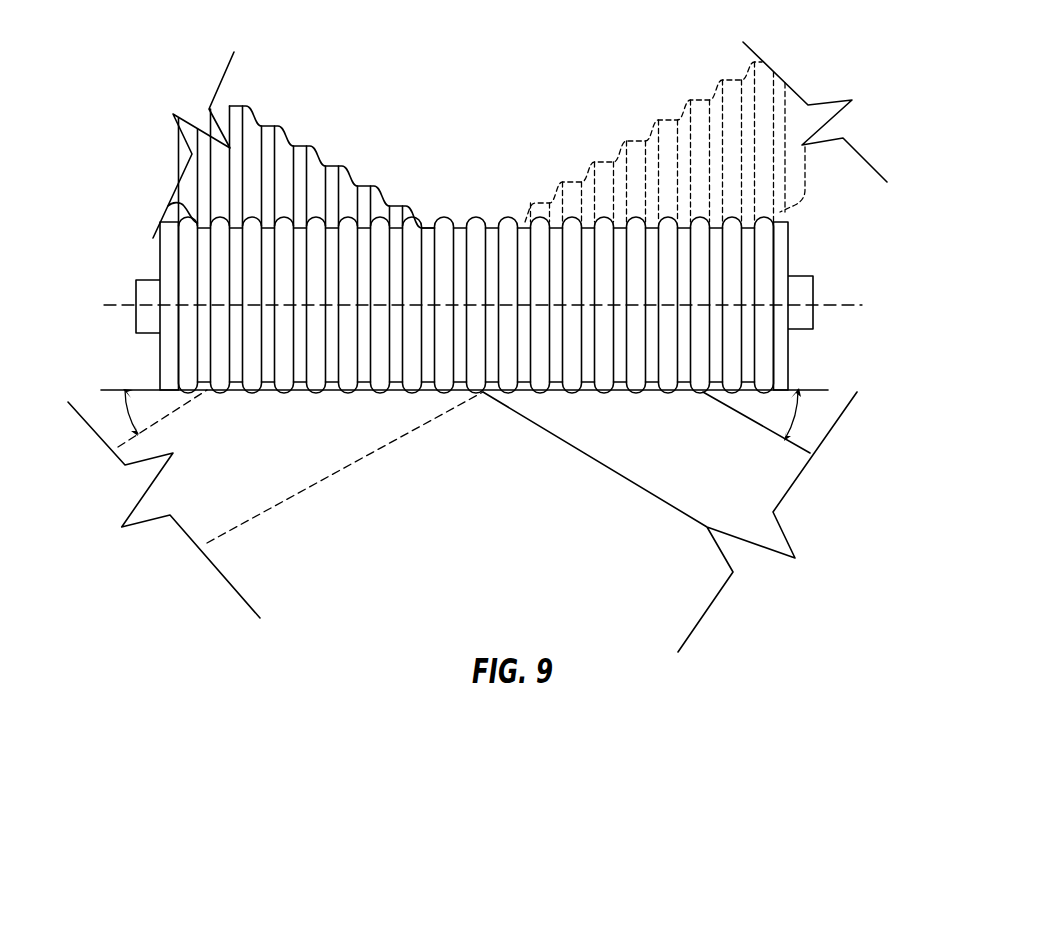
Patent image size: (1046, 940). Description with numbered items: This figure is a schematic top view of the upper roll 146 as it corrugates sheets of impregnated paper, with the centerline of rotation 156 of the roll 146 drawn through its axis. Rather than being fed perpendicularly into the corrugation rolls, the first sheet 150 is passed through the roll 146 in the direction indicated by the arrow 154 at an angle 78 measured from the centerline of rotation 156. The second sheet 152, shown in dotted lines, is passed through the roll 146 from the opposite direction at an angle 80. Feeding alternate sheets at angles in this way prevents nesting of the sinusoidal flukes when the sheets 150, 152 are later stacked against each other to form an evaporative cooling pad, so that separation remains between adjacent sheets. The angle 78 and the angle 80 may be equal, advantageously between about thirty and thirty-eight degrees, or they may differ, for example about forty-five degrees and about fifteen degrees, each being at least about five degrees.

The upper roll 146 is at (790, 250).
The centerline of rotation 156 is at (842, 298).
The first sheet 150 is at (762, 478).
The second sheet 152 is at (302, 451).
The arrow 154 is at (823, 520).
The angle 78 is at (800, 410).
The angle 80 is at (122, 388).